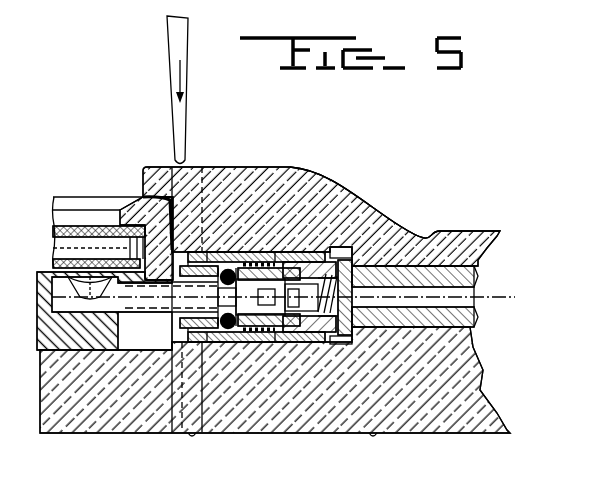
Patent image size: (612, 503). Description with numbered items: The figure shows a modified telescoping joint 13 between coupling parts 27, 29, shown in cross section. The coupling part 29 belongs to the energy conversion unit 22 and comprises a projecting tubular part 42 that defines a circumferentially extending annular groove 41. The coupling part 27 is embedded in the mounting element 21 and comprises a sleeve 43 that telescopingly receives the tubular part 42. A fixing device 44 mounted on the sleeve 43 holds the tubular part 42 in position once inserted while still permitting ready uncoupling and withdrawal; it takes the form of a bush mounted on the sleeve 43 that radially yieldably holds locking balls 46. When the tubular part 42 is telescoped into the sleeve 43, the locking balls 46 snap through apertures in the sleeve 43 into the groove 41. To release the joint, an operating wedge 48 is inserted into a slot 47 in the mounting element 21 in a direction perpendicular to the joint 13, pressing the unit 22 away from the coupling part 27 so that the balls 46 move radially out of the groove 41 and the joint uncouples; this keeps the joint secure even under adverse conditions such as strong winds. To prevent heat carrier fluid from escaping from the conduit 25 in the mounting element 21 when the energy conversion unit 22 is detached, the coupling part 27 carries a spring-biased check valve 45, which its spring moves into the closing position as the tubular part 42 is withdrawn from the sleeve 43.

The joint 13 is at (217, 248).
The mounting element 21 is at (450, 393).
The energy conversion unit 22 is at (95, 224).
The conduit 25 is at (472, 320).
The coupling part 27 is at (348, 198).
The coupling part 29 is at (148, 318).
The annular groove 41 is at (266, 345).
The tubular part 42 is at (181, 344).
The sleeve 43 is at (351, 253).
The fixing device 44 is at (228, 330).
The spring-biased check valve 45 is at (312, 335).
The locking balls 46 is at (243, 252).
The slot 47 is at (189, 173).
The operating wedge 48 is at (177, 37).